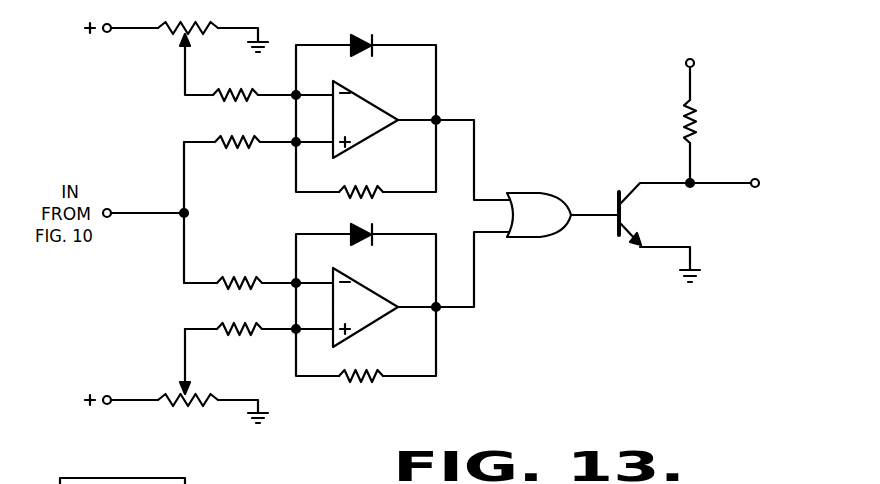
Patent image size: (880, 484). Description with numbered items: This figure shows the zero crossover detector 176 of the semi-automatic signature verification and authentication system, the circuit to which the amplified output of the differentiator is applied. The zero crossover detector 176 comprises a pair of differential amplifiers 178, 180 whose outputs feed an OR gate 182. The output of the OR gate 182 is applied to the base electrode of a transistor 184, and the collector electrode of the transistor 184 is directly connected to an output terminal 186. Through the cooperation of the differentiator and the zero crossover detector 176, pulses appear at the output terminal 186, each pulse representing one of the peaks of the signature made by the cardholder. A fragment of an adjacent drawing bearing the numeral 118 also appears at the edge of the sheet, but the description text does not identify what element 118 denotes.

The zero crossover detector 176 is at (520, 111).
The differential amplifier 178 is at (370, 103).
The differential amplifier 180 is at (367, 320).
The OR gate 182 is at (532, 238).
The transistor 184 is at (627, 215).
The output terminal 186 is at (753, 187).
The element of adjacent figure 118 is at (37, 483).